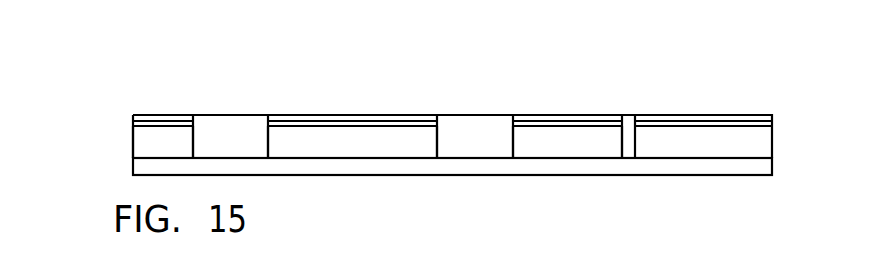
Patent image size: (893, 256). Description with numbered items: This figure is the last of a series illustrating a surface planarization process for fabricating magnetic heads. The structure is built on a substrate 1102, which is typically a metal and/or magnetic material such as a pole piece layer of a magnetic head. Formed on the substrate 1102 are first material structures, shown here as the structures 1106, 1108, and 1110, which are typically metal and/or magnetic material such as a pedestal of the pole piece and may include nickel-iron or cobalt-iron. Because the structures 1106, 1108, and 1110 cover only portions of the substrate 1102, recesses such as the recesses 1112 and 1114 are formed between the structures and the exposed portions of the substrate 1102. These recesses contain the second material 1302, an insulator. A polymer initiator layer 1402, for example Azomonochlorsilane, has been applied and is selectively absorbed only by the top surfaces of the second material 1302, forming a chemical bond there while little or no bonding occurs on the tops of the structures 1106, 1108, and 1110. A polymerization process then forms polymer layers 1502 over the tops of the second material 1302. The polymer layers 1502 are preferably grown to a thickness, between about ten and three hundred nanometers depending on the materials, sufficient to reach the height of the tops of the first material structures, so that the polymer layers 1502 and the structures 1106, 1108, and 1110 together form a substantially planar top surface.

The substrate 1102 is at (133, 163).
The structure 1106 is at (227, 113).
The structure 1108 is at (470, 115).
The structure 1110 is at (627, 115).
The recess 1112 is at (411, 145).
The recess 1114 is at (574, 143).
The second material 1302 is at (163, 137).
The polymer initiator layer 1402 is at (133, 124).
The polymer layers 1502 is at (133, 122).